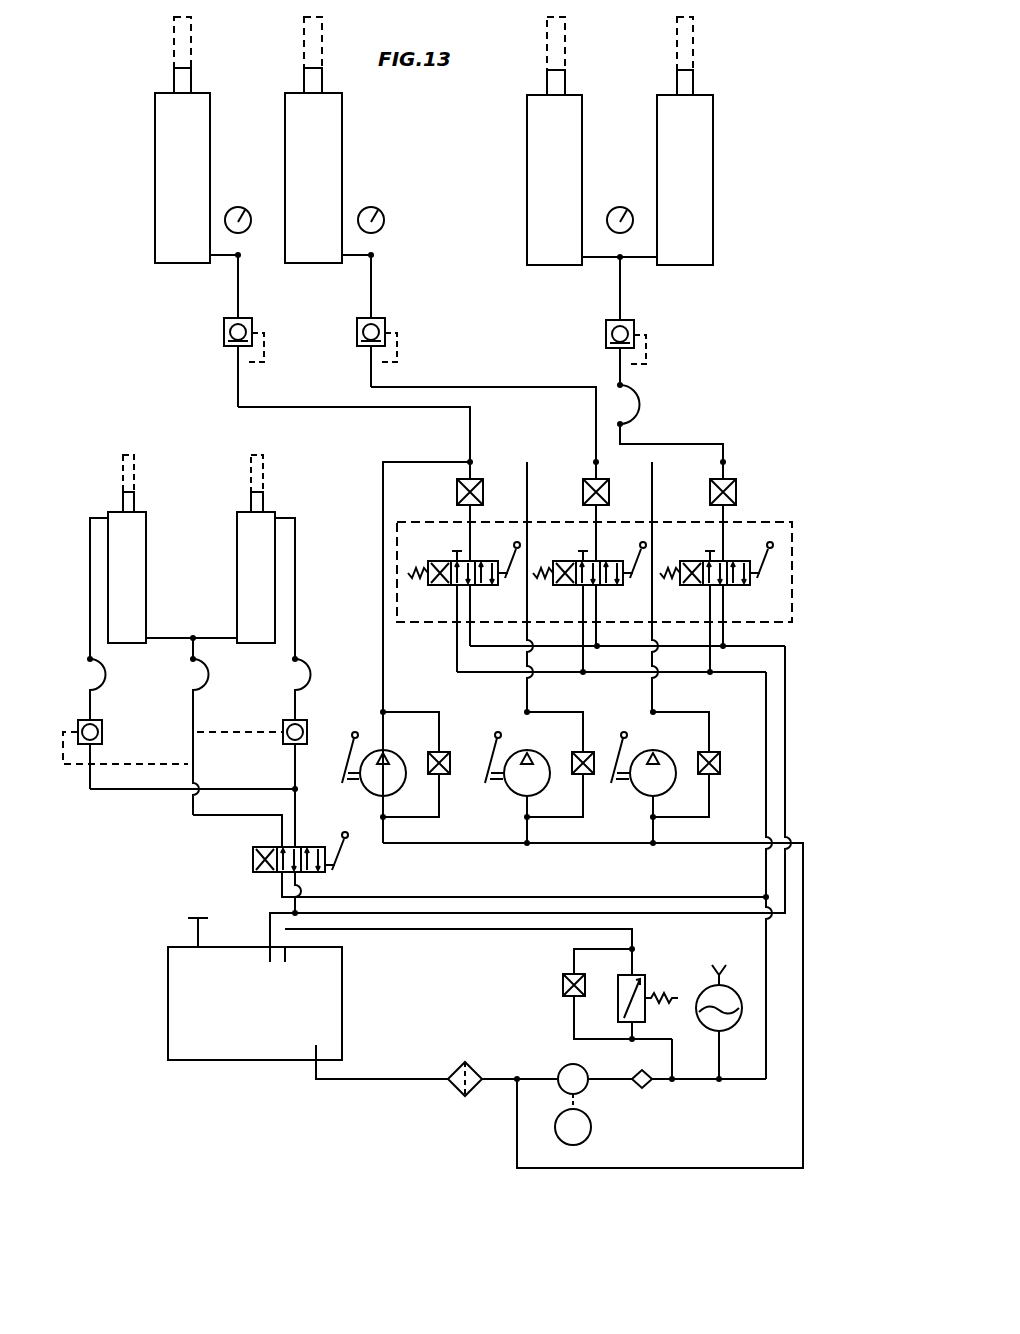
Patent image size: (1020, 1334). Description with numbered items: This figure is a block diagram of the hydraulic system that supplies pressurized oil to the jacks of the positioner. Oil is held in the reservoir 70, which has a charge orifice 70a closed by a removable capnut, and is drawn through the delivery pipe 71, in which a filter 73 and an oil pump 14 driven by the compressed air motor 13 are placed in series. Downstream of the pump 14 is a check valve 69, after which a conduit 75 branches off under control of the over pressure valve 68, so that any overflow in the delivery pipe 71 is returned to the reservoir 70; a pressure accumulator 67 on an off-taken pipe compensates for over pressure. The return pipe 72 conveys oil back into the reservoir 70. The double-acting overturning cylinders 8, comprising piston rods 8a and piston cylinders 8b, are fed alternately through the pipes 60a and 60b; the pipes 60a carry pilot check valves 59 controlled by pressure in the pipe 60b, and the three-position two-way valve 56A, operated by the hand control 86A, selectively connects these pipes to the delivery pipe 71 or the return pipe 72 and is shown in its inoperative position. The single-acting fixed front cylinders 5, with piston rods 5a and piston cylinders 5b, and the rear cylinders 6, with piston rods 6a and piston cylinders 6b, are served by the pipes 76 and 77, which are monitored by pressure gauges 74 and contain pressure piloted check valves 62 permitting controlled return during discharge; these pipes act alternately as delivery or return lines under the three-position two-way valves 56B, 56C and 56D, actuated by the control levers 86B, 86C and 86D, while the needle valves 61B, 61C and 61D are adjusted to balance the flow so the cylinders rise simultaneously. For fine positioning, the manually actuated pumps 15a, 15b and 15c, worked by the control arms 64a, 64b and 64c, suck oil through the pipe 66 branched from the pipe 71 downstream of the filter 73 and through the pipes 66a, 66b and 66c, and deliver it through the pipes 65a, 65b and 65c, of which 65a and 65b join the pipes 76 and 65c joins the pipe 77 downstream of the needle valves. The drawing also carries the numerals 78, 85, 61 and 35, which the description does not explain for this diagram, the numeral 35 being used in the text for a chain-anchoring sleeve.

The hydraulic cylinder 5 is at (153, 186).
The piston rod 5a is at (304, 80).
The piston cylinder 5b is at (291, 180).
The rear hydraulic cylinder 6 is at (525, 186).
The piston rod 6a is at (677, 81).
The piston cylinder 6b is at (664, 180).
The hydraulic cylinder 8 is at (232, 575).
The piston rod 8a is at (251, 508).
The piston cylinder 8b is at (236, 622).
The oil pressure gauge 74 is at (246, 229).
The pressure piloted check valve 62 is at (226, 324).
The pilot line 78 is at (265, 360).
The pipe 76 is at (378, 410).
The pipe 77 is at (638, 446).
The needle valve 61B is at (500, 474).
The needle valve 61C is at (624, 474).
The needle valve 61D is at (752, 474).
The three-position two-way valve 56B is at (434, 562).
The three-position two-way valve 56C is at (562, 562).
The three-position two-way valve 56D is at (690, 562).
The three-position two-way control valve 56A is at (256, 852).
The control lever 86B is at (512, 562).
The control lever 86C is at (638, 562).
The control lever 86D is at (765, 562).
The hand control 86A is at (336, 844).
The pipe 65a is at (384, 686).
The pipe 65b is at (528, 692).
The pipe 65c is at (654, 692).
The manually actuated pump 15a is at (396, 762).
The manually actuated pump 15b is at (540, 762).
The manually actuated pump 15c is at (666, 762).
The control arm 64a is at (346, 757).
The control arm 64b is at (488, 757).
The control arm 64c is at (616, 757).
The pipe 66a is at (388, 832).
The pipe 66b is at (532, 832).
The pipe 66c is at (660, 832).
The pipe 66 is at (700, 1168).
The pilot check valve 59 is at (100, 722).
The pilot line 85 is at (130, 764).
The pipe 60a is at (292, 772).
The pipe 60b is at (193, 802).
The oil return pipe 72 is at (282, 882).
The oil delivery pipe 71 is at (484, 912).
The oil reservoir 70 is at (170, 995).
The oil charge orifice 70a is at (198, 936).
The sleeve 35 is at (442, 938).
The check valve 61 is at (562, 978).
The over pressure valve 68 is at (636, 980).
The conduit 75 is at (675, 1048).
The pressure accumulator 67 is at (728, 987).
The filter 73 is at (458, 1070).
The oil pump 14 is at (565, 1066).
The compressed air motor 13 is at (588, 1138).
The check valve 69 is at (646, 1083).